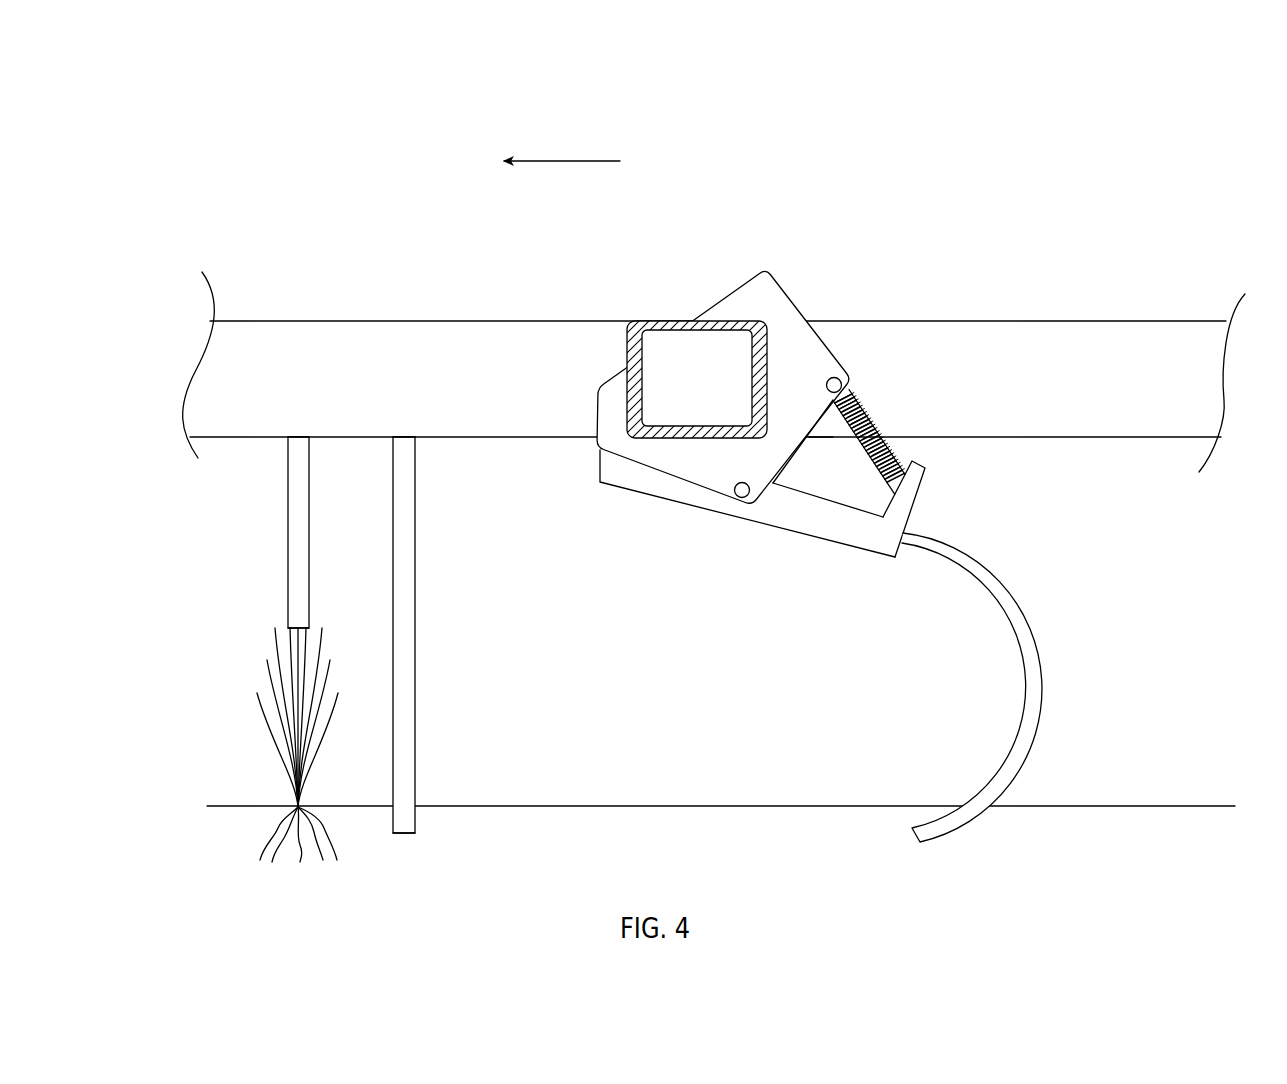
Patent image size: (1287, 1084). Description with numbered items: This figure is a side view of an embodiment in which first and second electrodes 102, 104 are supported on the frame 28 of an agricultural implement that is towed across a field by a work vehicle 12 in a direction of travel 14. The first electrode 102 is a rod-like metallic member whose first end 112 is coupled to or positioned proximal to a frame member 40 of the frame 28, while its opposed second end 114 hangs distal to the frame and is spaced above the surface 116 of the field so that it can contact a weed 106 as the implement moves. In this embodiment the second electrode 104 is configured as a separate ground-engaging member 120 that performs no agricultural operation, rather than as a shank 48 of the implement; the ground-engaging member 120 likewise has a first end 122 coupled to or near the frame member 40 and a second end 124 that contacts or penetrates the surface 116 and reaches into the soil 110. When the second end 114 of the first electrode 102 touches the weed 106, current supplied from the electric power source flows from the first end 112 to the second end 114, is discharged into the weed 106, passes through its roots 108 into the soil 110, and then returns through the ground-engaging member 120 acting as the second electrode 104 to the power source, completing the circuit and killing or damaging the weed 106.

The work vehicle 12 is at (1139, 144).
The direction of travel 14 is at (568, 161).
The frame 28 is at (302, 276).
The frame member 40 is at (1122, 320).
The shank 48 is at (1005, 620).
The first electrode 102 is at (288, 533).
The second electrode 104 is at (430, 721).
The weed 106 is at (278, 745).
The roots 108 is at (288, 868).
The soil 110 is at (530, 842).
The first end 112 is at (320, 448).
The second end 114 is at (276, 620).
The surface 116 is at (1147, 805).
The ground-engaging member 120 is at (415, 575).
The first end 122 is at (426, 448).
The second end 124 is at (404, 845).